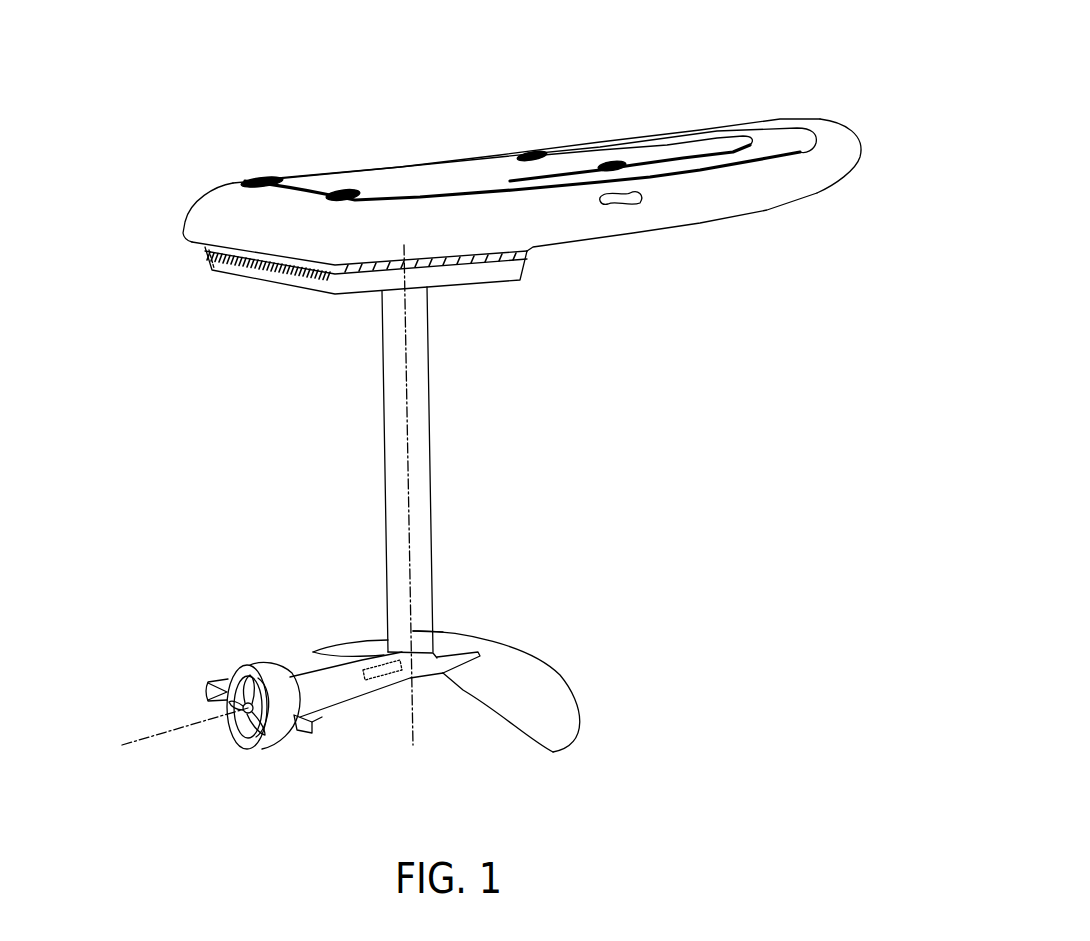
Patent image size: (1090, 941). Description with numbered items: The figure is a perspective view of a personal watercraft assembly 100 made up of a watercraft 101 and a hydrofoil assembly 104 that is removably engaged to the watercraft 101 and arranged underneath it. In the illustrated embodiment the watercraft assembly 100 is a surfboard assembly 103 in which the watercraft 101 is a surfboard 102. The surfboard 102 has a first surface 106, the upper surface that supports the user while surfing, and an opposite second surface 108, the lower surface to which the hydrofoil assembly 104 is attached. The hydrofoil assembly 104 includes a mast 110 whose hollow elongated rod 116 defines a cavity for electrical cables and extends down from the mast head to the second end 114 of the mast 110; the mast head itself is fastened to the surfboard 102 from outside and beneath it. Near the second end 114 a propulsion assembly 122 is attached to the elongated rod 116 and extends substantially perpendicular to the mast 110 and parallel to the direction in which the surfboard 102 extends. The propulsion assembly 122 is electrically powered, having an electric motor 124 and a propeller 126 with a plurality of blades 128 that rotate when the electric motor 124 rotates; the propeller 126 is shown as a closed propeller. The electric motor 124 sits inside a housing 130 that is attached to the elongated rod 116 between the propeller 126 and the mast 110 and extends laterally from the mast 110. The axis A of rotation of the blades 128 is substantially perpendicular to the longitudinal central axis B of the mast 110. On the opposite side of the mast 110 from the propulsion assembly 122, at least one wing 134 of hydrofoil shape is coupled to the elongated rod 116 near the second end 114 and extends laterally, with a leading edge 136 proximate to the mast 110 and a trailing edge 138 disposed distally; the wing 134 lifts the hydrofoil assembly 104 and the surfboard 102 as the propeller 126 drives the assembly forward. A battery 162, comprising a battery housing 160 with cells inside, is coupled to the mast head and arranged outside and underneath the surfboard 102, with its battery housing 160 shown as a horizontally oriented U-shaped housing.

The personal watercraft assembly 100 is at (669, 62).
The watercraft 101 is at (834, 168).
The surfboard 102 is at (842, 107).
The surfboard assembly 103 is at (520, 112).
The hydrofoil assembly 104 is at (458, 438).
The first surface 106 is at (529, 165).
The second surface 108 is at (652, 232).
The mast 110 is at (437, 375).
The second end 114 is at (423, 630).
The elongated rod 116 is at (400, 437).
The propulsion assembly 122 is at (332, 717).
The electric motor 124 is at (390, 682).
The propeller 126 is at (258, 663).
The blades 128 is at (262, 749).
The housing 130 is at (335, 655).
The wing 134 is at (488, 653).
The leading edge 136 is at (548, 658).
The trailing edge 138 is at (527, 730).
The battery housing 160 is at (307, 282).
The battery 162 is at (231, 269).
The axis A is at (172, 727).
The longitudinal central axis B is at (413, 723).